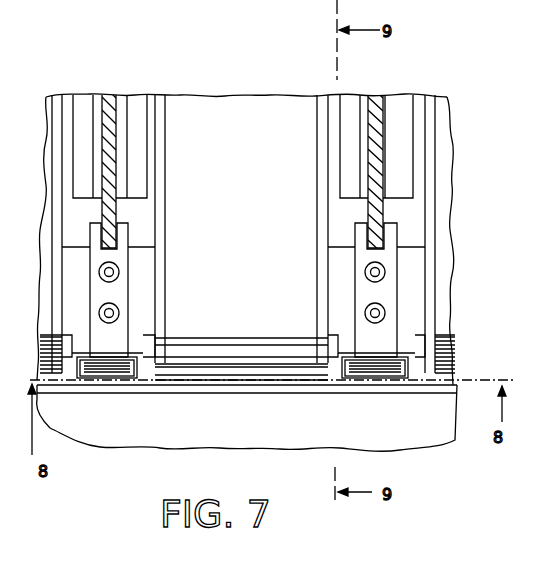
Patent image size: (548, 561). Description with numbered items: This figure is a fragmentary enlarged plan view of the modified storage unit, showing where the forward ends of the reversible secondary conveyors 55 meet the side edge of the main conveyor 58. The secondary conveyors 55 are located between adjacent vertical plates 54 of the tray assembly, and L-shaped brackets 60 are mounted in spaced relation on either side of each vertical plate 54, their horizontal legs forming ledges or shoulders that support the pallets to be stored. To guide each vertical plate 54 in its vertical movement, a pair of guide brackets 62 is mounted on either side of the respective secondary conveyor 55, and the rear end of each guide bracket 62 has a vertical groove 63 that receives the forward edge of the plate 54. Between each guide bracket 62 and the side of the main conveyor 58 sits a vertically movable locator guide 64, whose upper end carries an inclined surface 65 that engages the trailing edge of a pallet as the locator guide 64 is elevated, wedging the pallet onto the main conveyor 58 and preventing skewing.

The vertical plate 54 is at (116, 97).
The secondary conveyor 55 is at (46, 97).
The main conveyor 58 is at (155, 442).
The L-shaped bracket 60 is at (85, 107).
The guide bracket 62 is at (120, 288).
The vertical groove 63 is at (118, 230).
The locator guide 64 is at (100, 380).
The inclined surface 65 is at (117, 372).